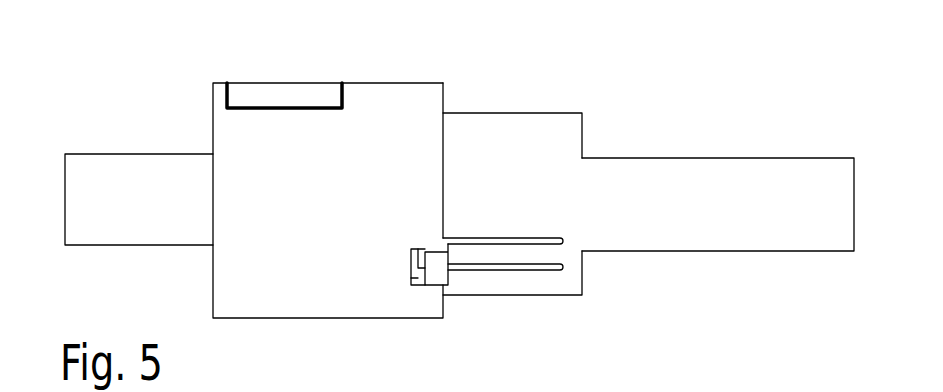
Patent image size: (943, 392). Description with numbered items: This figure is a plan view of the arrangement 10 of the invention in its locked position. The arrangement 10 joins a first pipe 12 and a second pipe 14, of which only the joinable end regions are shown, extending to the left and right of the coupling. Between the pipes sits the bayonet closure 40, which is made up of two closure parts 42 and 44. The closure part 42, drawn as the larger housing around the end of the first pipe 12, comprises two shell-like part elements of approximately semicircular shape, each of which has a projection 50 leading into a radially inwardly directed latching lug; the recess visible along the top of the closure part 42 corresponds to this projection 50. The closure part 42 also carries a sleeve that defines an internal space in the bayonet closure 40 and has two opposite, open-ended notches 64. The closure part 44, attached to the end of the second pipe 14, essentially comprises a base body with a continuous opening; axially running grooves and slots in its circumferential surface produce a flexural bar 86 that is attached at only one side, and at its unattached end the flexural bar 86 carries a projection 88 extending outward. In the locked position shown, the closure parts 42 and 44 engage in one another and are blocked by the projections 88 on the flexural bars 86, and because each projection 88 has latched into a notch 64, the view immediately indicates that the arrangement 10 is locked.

The arrangement 10 is at (680, 288).
The first pipe 12 is at (100, 183).
The second pipe 14 is at (780, 177).
The bayonet closure 40 is at (695, 388).
The closure part 42 is at (377, 117).
The closure part 44 is at (543, 147).
The projection 50 is at (276, 92).
The notch 64 is at (418, 287).
The flexural bar 86 is at (533, 253).
The projection 88 is at (435, 268).